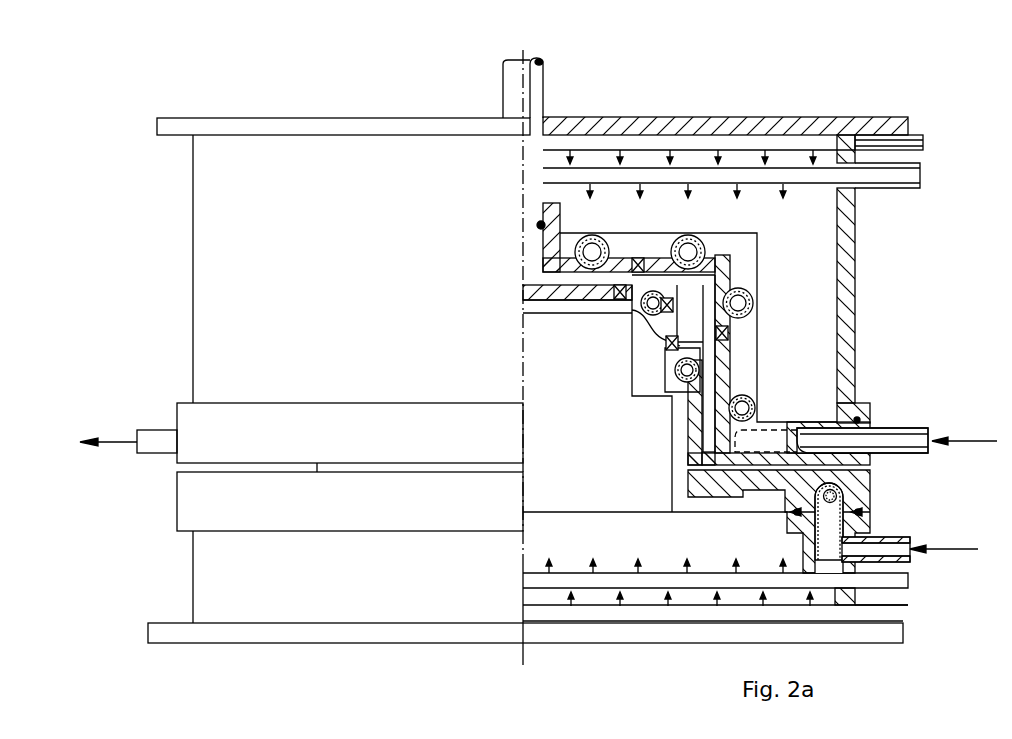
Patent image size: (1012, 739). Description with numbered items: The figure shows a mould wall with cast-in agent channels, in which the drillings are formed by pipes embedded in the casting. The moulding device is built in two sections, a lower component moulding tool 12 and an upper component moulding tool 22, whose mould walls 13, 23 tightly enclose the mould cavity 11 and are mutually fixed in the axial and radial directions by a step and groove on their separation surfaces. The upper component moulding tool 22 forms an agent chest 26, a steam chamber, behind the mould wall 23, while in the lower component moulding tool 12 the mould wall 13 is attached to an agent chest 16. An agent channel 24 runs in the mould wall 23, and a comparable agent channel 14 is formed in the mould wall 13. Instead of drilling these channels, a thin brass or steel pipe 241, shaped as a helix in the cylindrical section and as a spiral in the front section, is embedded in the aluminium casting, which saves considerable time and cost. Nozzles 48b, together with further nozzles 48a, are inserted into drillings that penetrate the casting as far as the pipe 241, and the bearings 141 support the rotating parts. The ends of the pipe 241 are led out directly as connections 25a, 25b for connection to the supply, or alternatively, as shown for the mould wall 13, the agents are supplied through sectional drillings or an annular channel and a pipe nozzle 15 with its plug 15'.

The mould cavity 11 is at (701, 329).
The lower component moulding tool 12 is at (379, 590).
The mould wall 13 is at (697, 422).
The agent channel 14 is at (893, 548).
The pipe nozzle 15 is at (914, 523).
The plug pin 15' is at (879, 486).
The agent chest 16 is at (574, 399).
The upper component moulding tool 22 is at (331, 283).
The mould wall 23 is at (727, 377).
The agent channel 24 is at (878, 438).
The connection 25a is at (165, 447).
The connection 25b is at (915, 428).
The agent chest 26 is at (809, 272).
The seals 48a is at (638, 260).
The nozzles 48b is at (668, 302).
The ball bearing 141 is at (702, 367).
The pipe 241 is at (697, 236).